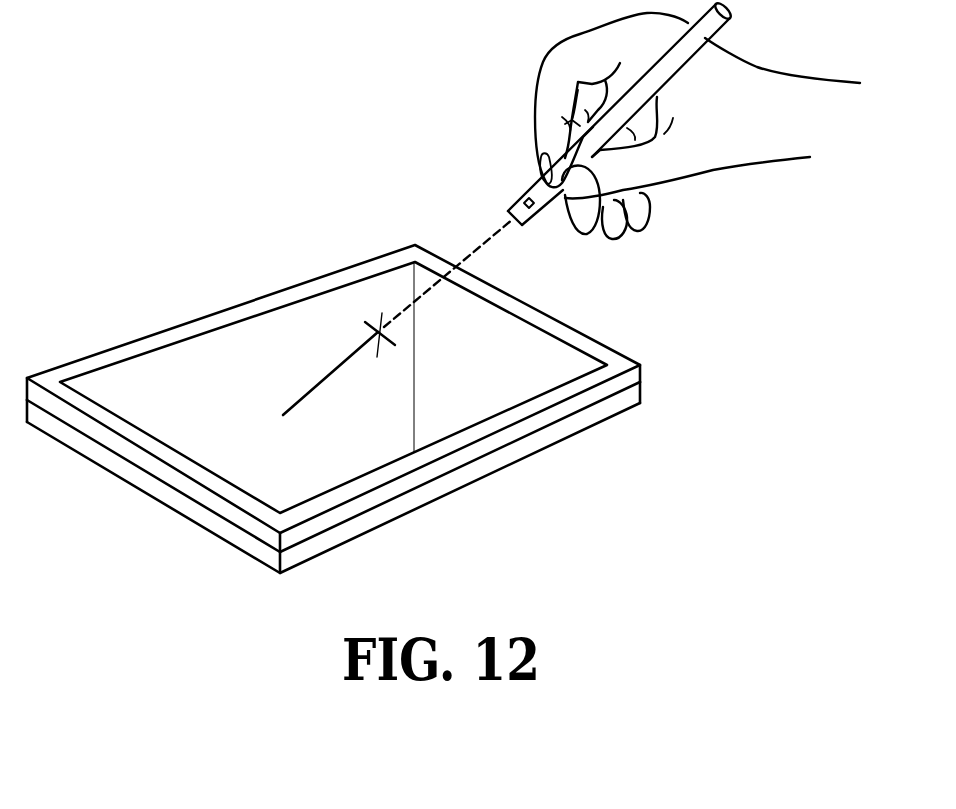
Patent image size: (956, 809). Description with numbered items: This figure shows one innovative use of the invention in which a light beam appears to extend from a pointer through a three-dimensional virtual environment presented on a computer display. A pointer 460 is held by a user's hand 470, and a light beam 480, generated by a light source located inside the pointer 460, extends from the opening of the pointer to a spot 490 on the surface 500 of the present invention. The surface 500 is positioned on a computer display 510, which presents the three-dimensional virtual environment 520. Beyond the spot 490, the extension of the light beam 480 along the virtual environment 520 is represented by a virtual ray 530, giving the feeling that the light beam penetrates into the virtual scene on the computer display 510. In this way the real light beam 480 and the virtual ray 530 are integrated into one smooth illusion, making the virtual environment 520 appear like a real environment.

The pointer 460 is at (712, 38).
The user's hand 470 is at (730, 157).
The light beam 480 is at (477, 250).
The spot 490 is at (385, 352).
The surface 500 is at (452, 460).
The computer display 510 is at (358, 520).
The 3D virtual environment 520 is at (152, 375).
The virtual ray 530 is at (320, 385).